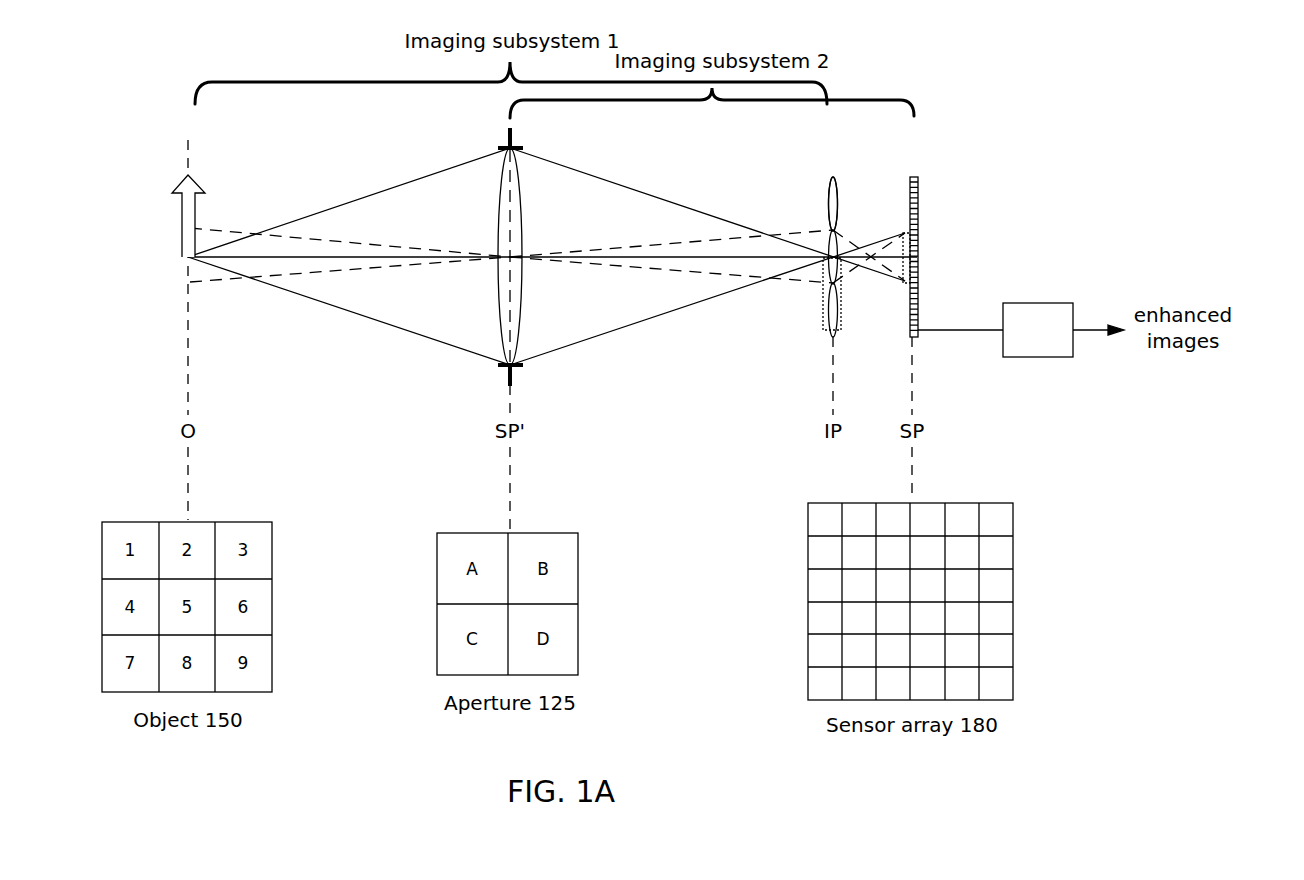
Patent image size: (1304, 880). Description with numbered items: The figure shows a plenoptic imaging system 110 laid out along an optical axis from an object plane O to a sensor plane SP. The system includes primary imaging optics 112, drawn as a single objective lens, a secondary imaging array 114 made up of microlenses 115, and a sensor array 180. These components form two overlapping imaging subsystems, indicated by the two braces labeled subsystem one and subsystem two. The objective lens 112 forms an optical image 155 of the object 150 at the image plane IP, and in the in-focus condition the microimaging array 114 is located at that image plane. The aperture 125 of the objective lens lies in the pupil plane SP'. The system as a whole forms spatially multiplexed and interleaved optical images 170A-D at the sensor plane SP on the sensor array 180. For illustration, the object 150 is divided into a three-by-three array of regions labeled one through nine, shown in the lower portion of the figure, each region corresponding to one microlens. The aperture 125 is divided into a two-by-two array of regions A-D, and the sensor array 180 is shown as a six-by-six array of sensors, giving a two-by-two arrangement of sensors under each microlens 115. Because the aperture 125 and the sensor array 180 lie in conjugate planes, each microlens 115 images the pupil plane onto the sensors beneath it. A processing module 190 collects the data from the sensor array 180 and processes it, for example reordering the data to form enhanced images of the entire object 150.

The plenoptic imaging system 110 is at (962, 157).
The primary imaging optics 112 is at (494, 178).
The secondary imaging array 114 is at (856, 169).
The microlens 115 is at (828, 212).
The aperture 125 is at (534, 180).
The object 150 is at (200, 195).
The optical image 155 is at (827, 326).
The optical images 170A-D is at (902, 250).
The sensor array 180 is at (921, 198).
The processing module 190 is at (1038, 330).